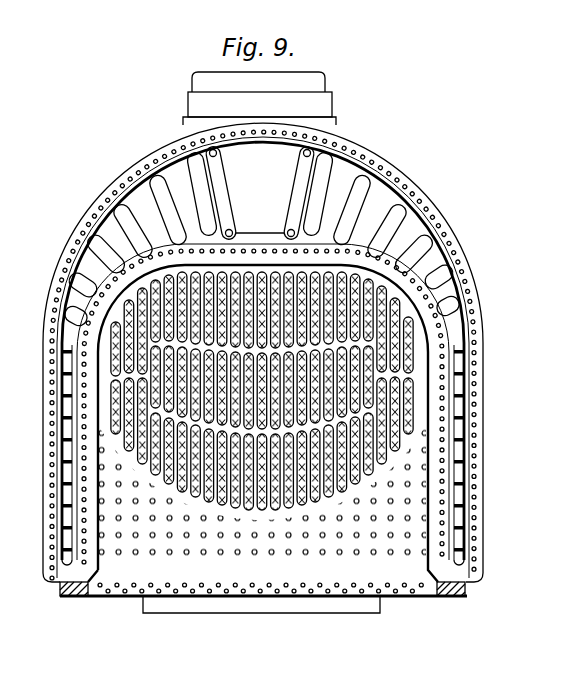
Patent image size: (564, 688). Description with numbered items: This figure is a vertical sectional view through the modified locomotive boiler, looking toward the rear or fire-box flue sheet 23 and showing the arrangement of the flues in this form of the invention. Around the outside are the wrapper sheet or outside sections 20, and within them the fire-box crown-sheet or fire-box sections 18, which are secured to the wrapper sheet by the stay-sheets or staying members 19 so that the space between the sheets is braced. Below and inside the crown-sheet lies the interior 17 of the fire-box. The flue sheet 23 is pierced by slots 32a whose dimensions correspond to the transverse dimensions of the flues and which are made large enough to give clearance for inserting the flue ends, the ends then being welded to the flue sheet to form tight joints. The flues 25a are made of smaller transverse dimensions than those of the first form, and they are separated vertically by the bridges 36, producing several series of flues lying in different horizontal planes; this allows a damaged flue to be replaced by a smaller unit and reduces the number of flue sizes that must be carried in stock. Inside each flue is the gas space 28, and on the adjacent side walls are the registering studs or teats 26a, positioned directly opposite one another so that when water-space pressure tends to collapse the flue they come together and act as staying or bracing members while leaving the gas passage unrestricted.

The fire-box interior 17 is at (400, 483).
The fire-box crown-sheet 18 is at (400, 270).
The stay-sheets 19 is at (340, 197).
The wrapper sheet 20 is at (137, 176).
The rear or fire-box flue sheet 23 is at (95, 437).
The flues 25a is at (405, 402).
The registering studs or teats 26a is at (362, 467).
The gas space 28 is at (412, 370).
The slots in fire-box flue sheet 32a is at (430, 290).
The bridges 36 is at (110, 382).